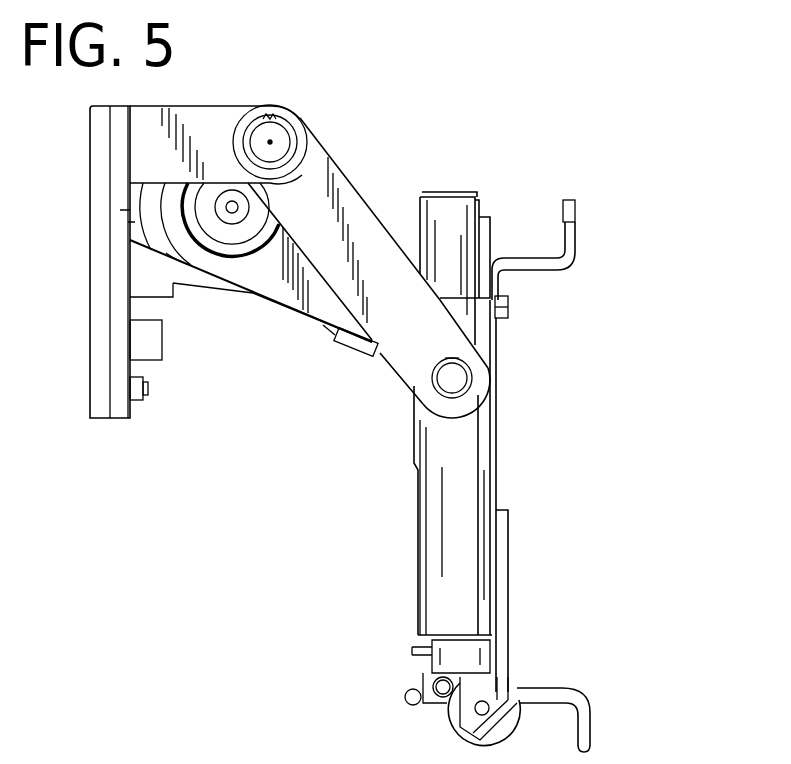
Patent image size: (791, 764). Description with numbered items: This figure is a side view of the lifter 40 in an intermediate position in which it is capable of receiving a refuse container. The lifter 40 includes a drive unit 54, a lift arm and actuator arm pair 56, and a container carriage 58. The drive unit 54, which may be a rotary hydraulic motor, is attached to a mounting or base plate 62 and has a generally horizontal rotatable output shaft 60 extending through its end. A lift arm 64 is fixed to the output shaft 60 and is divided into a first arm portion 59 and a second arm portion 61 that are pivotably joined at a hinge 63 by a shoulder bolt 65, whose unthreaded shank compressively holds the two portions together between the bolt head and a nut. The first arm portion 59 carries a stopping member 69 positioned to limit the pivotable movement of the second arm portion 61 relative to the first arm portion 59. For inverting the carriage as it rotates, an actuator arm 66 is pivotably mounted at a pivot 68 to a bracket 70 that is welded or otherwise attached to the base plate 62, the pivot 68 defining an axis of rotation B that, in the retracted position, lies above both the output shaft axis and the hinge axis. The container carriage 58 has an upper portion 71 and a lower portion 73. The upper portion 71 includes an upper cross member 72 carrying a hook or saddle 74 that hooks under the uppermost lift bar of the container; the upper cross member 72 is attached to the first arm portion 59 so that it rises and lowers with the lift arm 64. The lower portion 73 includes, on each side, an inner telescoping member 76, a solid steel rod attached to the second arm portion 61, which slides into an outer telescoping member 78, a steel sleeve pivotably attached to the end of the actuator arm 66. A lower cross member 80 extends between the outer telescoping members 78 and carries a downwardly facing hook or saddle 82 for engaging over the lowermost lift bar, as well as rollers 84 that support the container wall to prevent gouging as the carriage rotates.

The lifter 40 is at (697, 206).
The drive unit 54 is at (133, 208).
The lift arm and actuator arm pair 56 is at (426, 134).
The container carriage 58 is at (615, 441).
The first arm portion 59 is at (273, 287).
The output shaft 60 is at (200, 233).
The second arm portion 61 is at (406, 208).
The base plate 62 is at (118, 116).
The hinge 63 is at (323, 328).
The lift arm 64 is at (190, 268).
The shoulder bolt 65 is at (228, 217).
The actuator arm 66 is at (345, 177).
The pivot 68 is at (287, 127).
The axis of rotation B is at (272, 142).
The stopping member 69 is at (372, 346).
The bracket 70 is at (145, 143).
The upper portion 71 is at (512, 287).
The upper cross member 72 is at (483, 235).
The lower portion 73 is at (512, 480).
The hook or saddle 74 is at (570, 236).
The inner telescoping member 76 is at (480, 200).
The outer telescoping member 78 is at (415, 572).
The lower cross member 80 is at (508, 563).
The hook or saddle 82 is at (590, 706).
The rollers 84 is at (447, 720).